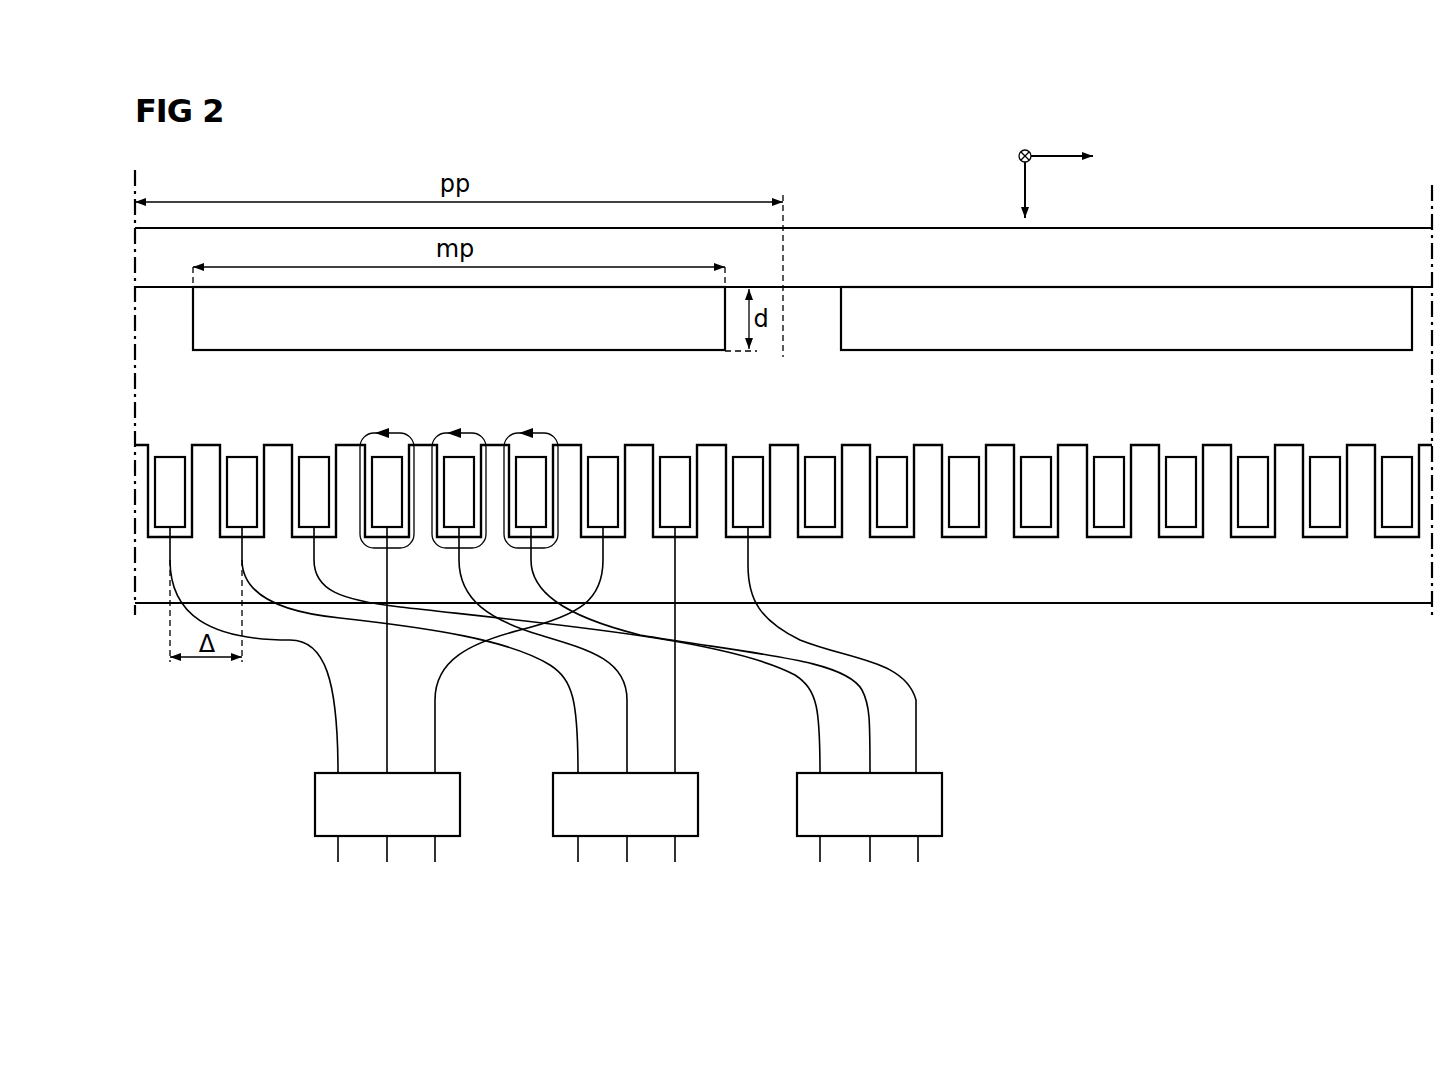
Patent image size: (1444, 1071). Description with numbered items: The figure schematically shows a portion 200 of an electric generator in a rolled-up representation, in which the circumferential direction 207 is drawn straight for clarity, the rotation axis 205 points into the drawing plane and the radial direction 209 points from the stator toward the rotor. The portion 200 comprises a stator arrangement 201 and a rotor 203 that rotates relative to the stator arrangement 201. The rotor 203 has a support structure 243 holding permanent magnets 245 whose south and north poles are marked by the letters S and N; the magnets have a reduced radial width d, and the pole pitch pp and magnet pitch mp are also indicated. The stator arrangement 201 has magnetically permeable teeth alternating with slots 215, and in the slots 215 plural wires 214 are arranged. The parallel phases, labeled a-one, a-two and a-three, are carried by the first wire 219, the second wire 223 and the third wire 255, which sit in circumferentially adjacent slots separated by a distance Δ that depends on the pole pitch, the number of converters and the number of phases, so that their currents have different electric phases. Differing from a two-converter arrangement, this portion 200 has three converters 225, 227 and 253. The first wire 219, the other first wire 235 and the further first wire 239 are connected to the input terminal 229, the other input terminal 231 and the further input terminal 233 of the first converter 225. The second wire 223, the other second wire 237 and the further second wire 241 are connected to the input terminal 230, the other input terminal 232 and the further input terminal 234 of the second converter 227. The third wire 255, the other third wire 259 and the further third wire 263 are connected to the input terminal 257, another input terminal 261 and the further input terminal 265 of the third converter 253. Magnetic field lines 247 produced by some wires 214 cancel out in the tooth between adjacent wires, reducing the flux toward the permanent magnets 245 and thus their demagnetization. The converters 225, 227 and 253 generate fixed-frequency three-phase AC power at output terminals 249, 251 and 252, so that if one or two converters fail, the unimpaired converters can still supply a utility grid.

The portion of the electric generator 200 is at (1348, 170).
The stator arrangement 201 is at (1300, 720).
The rotor 203 is at (880, 200).
The rotation axis 205 is at (1022, 149).
The circumferential direction 207 is at (1057, 153).
The radial direction 209 is at (1022, 183).
The wires 214 is at (822, 457).
The slots 215 is at (150, 437).
The first wire 219 is at (172, 457).
The second wire 223 is at (244, 457).
The third wire 255 is at (316, 457).
The other first wire 235 is at (395, 457).
The other second wire 237 is at (467, 457).
The other third wire 259 is at (539, 457).
The further first wire 239 is at (605, 457).
The further second wire 241 is at (672, 457).
The further third wire 263 is at (750, 457).
The support structure 243 is at (1238, 232).
The permanent magnets 245 is at (700, 352).
The magnetic field lines 247 is at (403, 549).
The first converter 225 is at (460, 803).
The second converter 227 is at (698, 803).
The third converter 253 is at (942, 803).
The input terminal 229 is at (336, 768).
The other input terminal 231 is at (389, 768).
The further input terminal 233 is at (437, 768).
The input terminal 230 is at (576, 768).
The other input terminal 232 is at (629, 768).
The further input terminal 234 is at (677, 768).
The input terminal 257 is at (818, 768).
The another input terminal 261 is at (872, 768).
The further input terminal 265 is at (920, 768).
The output terminals 249 is at (338, 852).
The output terminals 251 is at (578, 852).
The output terminals 252 is at (820, 852).